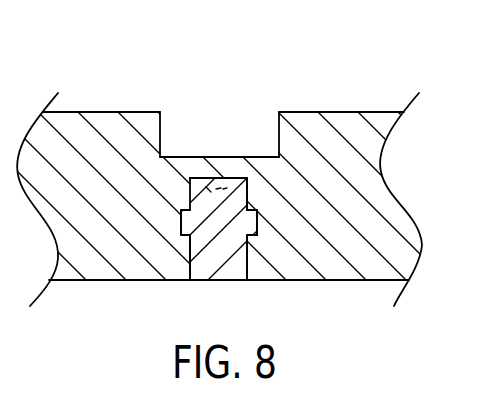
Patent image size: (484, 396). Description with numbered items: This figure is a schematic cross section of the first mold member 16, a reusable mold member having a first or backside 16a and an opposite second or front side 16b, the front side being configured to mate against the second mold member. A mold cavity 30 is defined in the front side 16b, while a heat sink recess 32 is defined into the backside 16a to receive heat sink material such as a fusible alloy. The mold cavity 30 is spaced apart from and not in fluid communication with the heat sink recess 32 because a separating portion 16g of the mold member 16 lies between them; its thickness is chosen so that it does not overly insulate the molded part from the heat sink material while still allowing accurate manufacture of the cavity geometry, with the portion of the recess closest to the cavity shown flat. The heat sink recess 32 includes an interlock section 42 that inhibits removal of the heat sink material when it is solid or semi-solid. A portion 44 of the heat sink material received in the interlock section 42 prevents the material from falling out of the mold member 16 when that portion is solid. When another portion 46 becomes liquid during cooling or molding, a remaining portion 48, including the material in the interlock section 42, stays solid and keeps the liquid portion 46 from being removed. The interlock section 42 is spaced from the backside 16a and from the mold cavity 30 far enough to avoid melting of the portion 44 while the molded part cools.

The first mold member 16 is at (388, 203).
The backside of the first mold member 16a is at (344, 281).
The front side of the first mold member 16b is at (339, 112).
The separating portion 16g is at (200, 170).
The mold cavity 30 is at (213, 120).
The heat sink recess 32 is at (191, 246).
The interlock section 42 is at (267, 222).
The portion of the heat sink material received in the interlock section 44 is at (182, 215).
The liquid portion of the heat sink material 46 is at (241, 178).
The remaining solid portion of the heat sink material 48 is at (236, 236).